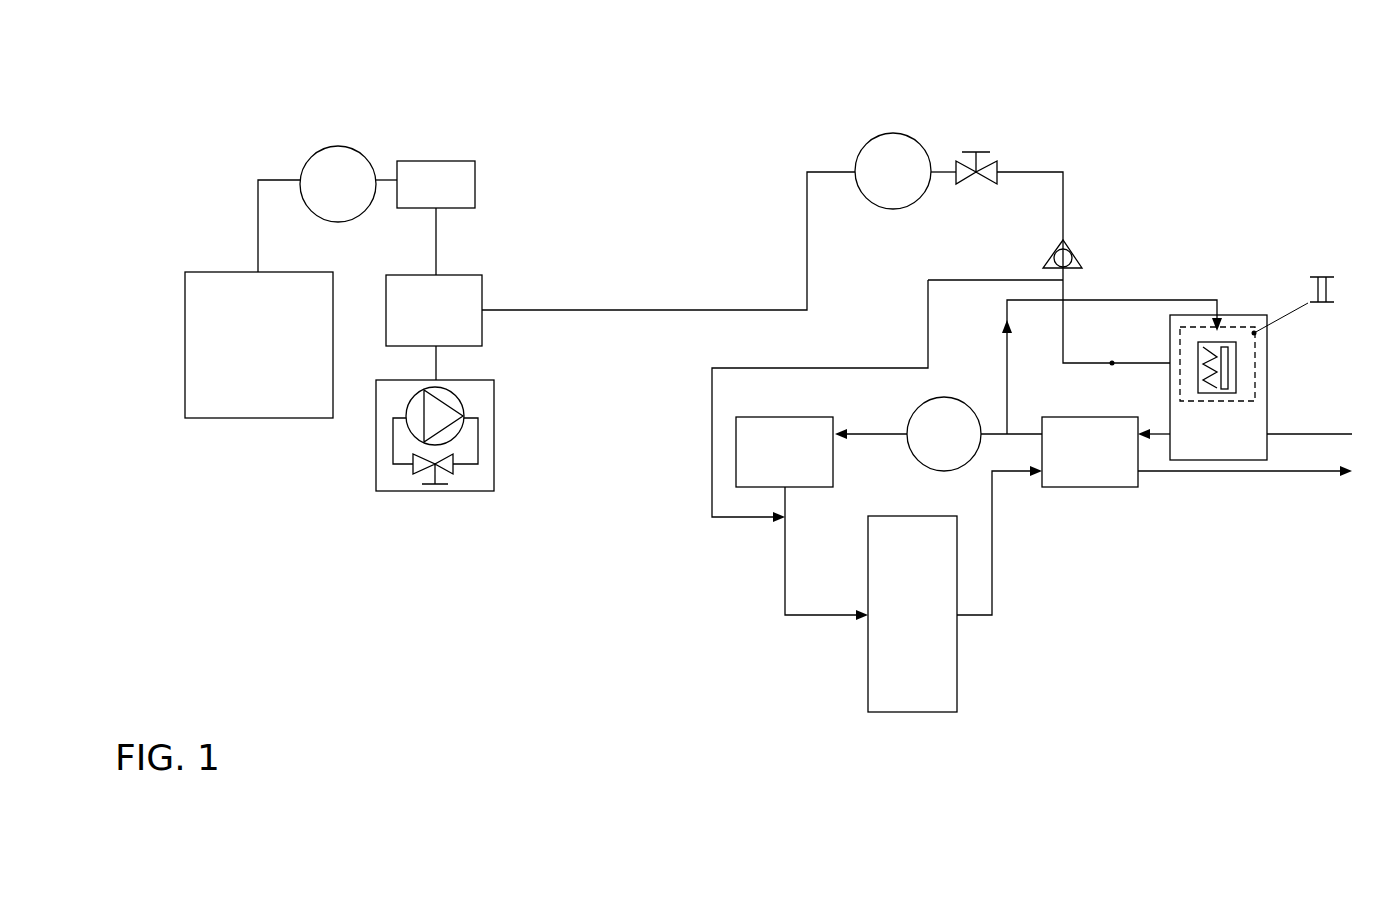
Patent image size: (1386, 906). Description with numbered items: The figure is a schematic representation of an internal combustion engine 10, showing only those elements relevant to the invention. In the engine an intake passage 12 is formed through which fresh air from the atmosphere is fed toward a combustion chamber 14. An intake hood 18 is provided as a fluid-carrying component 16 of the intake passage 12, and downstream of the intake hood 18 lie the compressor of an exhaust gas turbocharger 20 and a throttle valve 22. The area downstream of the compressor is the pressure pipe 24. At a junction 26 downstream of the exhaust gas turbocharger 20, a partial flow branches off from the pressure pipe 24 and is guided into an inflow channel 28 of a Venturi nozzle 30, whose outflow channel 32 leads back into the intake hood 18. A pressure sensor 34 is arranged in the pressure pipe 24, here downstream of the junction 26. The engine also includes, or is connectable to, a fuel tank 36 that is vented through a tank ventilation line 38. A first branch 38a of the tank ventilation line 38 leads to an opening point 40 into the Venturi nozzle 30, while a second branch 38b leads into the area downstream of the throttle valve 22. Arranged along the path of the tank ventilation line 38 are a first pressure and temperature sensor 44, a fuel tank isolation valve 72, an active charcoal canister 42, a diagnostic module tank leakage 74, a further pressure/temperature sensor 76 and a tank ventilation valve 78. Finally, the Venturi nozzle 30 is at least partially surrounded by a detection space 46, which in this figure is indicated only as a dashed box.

The internal combustion engine 10 is at (1102, 124).
The intake passage 12 is at (1323, 434).
The combustion chamber 14 is at (942, 671).
The fluid-carrying component 16 is at (1240, 443).
The intake hood 18 is at (1221, 426).
The exhaust gas turbocharger 20 is at (1090, 467).
The throttle valve 22 is at (750, 473).
The pressure pipe 24 is at (867, 434).
The junction 26 is at (1000, 408).
The inflow channel 28 is at (1216, 345).
The Venturi nozzle 30 is at (1252, 347).
The outflow channel 32 is at (1217, 382).
The pressure sensor 34 is at (930, 455).
The fuel tank 36 is at (268, 385).
The tank ventilation line 38 is at (670, 310).
The first branch 38a is at (1112, 363).
The second branch 38b is at (890, 368).
The opening point 40 is at (1196, 328).
The active charcoal canister 42 is at (468, 292).
The first pressure and temperature sensor 44 is at (347, 165).
The detection space 46 is at (1190, 377).
The fuel tank isolation valve 72 is at (437, 173).
The diagnostic module tank leakage 74 is at (479, 394).
The pressure/temperature sensor 76 is at (887, 165).
The tank ventilation valve 78 is at (980, 133).